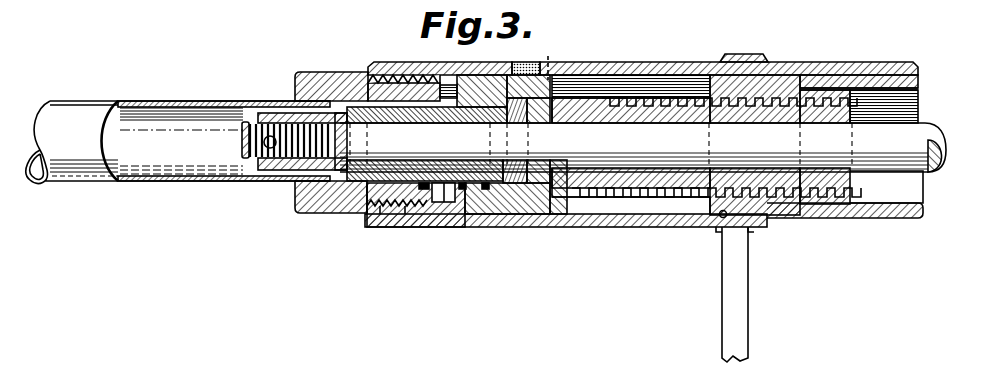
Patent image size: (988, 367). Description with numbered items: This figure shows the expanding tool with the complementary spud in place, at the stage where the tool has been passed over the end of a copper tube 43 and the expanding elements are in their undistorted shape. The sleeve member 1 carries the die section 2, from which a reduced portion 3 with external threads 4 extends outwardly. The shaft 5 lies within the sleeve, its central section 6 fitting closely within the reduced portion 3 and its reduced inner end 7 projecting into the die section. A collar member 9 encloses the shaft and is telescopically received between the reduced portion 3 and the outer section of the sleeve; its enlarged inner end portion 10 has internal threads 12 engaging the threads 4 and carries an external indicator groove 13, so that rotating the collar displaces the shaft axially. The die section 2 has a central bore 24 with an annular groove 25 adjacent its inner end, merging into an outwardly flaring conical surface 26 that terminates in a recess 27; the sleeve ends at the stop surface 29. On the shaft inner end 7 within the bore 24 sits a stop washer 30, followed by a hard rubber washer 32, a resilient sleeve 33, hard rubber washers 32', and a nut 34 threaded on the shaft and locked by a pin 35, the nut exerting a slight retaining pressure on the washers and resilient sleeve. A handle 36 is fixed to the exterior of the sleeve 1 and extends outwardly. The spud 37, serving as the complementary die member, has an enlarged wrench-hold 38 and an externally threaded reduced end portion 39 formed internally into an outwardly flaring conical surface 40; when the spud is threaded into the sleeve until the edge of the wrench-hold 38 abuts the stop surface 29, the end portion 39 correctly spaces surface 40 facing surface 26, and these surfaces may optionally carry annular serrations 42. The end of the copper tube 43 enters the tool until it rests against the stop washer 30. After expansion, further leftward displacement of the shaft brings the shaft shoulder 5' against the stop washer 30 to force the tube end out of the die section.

The sleeve member 1 is at (593, 64).
The die section 2 is at (490, 80).
The reduced portion 3 is at (629, 110).
The external threads 4 is at (667, 103).
The shaft 5 is at (772, 168).
The shaft shoulder 5' is at (562, 209).
The central section 6 is at (942, 150).
The reduced inner end 7 is at (245, 147).
The collar member 9 is at (890, 220).
The enlarged inner end portion 10 is at (783, 221).
The internal threads 12 is at (698, 216).
The external indicator groove 13 is at (722, 219).
The central bore 24 is at (510, 214).
The annular groove 25 is at (476, 205).
The outwardly flaring conical surface 26 is at (462, 205).
The recess 27 is at (445, 205).
The end stop surface 29 is at (368, 215).
The stop washer 30 is at (546, 78).
The hard rubber washer 32 is at (475, 73).
The hard rubber washers 32' is at (417, 110).
The resilient sleeve 33 is at (437, 106).
The nut 34 is at (290, 118).
The pin 35 is at (258, 132).
The handle 36 is at (740, 331).
The spud 37 is at (295, 200).
The enlarged wrench-hold 38 is at (313, 215).
The reduced end portion 39 is at (398, 215).
The outwardly flaring conical surface 40 is at (415, 212).
The annular serrations 42 is at (431, 205).
The copper tube 43 is at (97, 181).